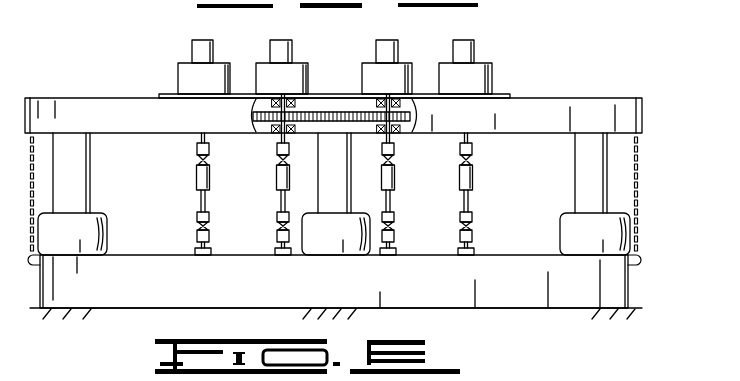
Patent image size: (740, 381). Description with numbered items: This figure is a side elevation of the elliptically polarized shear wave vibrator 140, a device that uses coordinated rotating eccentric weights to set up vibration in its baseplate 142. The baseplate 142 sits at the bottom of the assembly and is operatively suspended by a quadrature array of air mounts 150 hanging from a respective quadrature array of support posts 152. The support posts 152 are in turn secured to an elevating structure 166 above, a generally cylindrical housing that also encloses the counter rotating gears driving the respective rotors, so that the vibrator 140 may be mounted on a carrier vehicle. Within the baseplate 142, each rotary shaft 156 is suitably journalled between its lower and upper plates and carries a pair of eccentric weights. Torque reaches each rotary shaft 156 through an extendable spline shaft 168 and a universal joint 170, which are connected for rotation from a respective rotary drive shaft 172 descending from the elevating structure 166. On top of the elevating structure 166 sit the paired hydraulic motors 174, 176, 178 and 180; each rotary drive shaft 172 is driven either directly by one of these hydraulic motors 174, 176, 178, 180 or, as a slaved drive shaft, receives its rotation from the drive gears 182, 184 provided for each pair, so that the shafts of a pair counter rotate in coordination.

The elliptically polarized shear wave vibrator 140 is at (707, 168).
The baseplate 142 is at (525, 292).
The air mounts 150 is at (70, 227).
The support posts 152 is at (72, 164).
The rotary shafts 156 is at (197, 250).
The elevating structure 166 is at (557, 97).
The extendable spline shaft 168 is at (207, 175).
The universal joint 170 is at (207, 227).
The rotary drive shaft 172 is at (207, 137).
The hydraulic motor 174 is at (478, 75).
The hydraulic motor 176 is at (400, 70).
The hydraulic motor 178 is at (268, 70).
The hydraulic motor 180 is at (187, 68).
The drive gears 182 is at (365, 116).
The drive gears 184 is at (260, 115).